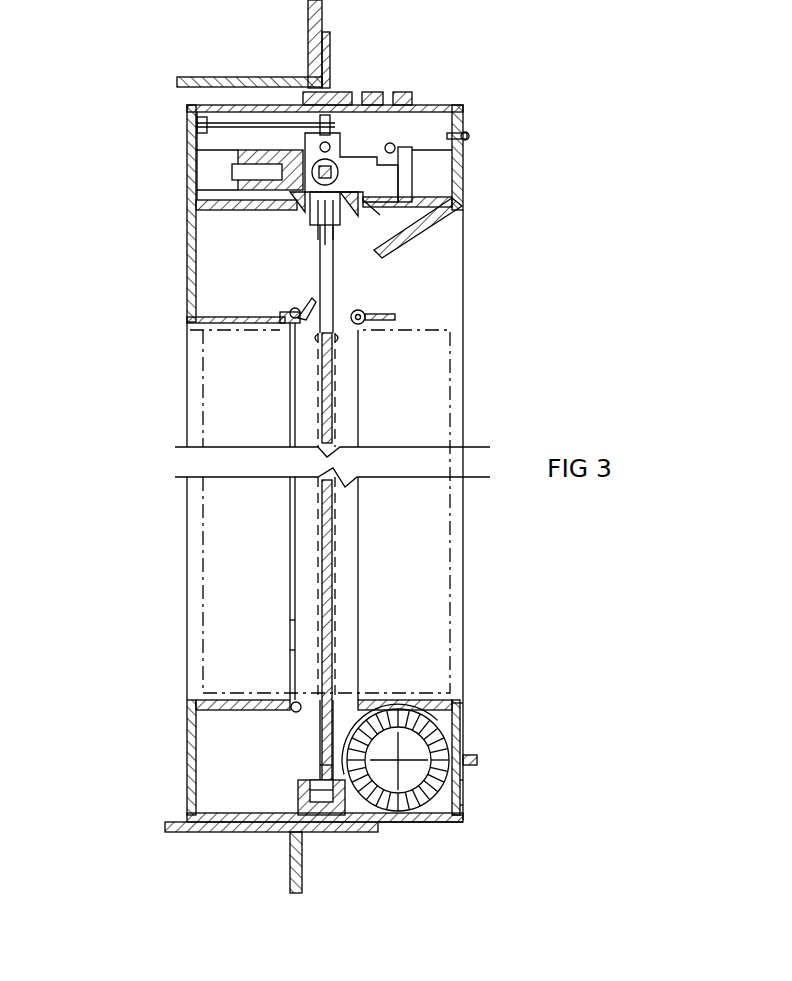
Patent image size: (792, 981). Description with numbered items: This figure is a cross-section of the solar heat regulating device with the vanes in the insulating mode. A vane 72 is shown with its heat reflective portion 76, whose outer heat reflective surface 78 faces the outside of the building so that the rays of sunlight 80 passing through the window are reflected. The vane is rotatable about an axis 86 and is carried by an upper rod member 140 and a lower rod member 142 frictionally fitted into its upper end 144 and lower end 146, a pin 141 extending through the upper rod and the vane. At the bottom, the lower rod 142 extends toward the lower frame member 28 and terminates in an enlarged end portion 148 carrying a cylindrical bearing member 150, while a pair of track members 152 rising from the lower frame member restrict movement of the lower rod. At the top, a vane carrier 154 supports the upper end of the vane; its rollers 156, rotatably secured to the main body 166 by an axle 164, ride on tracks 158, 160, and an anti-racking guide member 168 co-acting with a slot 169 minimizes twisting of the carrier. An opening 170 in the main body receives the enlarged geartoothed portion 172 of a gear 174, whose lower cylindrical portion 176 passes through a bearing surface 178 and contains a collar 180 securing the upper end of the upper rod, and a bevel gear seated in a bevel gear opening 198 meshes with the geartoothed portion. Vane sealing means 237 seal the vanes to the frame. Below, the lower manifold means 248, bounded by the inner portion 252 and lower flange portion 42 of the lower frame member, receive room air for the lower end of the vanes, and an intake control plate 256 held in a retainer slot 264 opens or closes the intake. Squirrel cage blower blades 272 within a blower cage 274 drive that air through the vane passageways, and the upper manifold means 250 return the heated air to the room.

The lower frame member 28 is at (463, 808).
The lower flange portion 42 is at (425, 822).
The vane 72 is at (292, 650).
The heat reflective portion 76 is at (292, 620).
The heat reflective surface 78 is at (292, 585).
The rays of sunlight 80 is at (266, 436).
The axis 86 is at (323, 845).
The upper rod member 140 is at (366, 322).
The pin 141 is at (385, 338).
The lower rod member 142 is at (290, 712).
The upper end of the vane 144 is at (330, 330).
The lower end of the vane 146 is at (340, 690).
The enlarged end portion 148 is at (300, 800).
The cylindrical bearing member 150 is at (298, 787).
The track members 152 is at (200, 745).
The vane carrier 154 is at (460, 143).
The rollers 156 is at (196, 150).
The track 158 is at (240, 205).
The track 160 is at (470, 193).
The axle 164 is at (232, 172).
The main body 166 is at (195, 123).
The anti-racking guide member 168 is at (205, 215).
The slot 169 is at (372, 202).
The opening 170 is at (420, 250).
The geartoothed portion 172 is at (465, 122).
The gear 174 is at (285, 318).
The lower cylindrical portion 176 is at (292, 312).
The bearing surface 178 is at (300, 225).
The collar 180 is at (305, 235).
The bevel gear opening 198 is at (300, 148).
The vane sealing means 237 is at (268, 338).
The lower manifold means 248 is at (485, 733).
The upper manifold means 250 is at (460, 315).
The inner portion 252 is at (463, 780).
The intake control plate 256 is at (463, 805).
The slot 264 is at (458, 703).
The blower blades 272 is at (463, 752).
The blower cage 274 is at (463, 783).